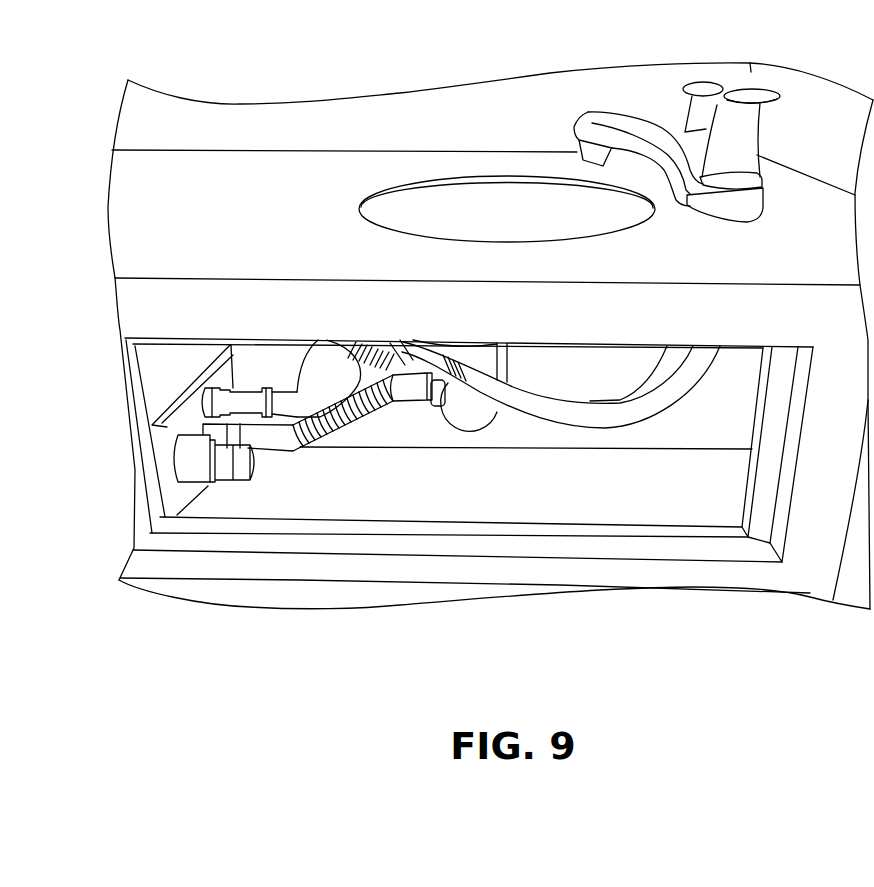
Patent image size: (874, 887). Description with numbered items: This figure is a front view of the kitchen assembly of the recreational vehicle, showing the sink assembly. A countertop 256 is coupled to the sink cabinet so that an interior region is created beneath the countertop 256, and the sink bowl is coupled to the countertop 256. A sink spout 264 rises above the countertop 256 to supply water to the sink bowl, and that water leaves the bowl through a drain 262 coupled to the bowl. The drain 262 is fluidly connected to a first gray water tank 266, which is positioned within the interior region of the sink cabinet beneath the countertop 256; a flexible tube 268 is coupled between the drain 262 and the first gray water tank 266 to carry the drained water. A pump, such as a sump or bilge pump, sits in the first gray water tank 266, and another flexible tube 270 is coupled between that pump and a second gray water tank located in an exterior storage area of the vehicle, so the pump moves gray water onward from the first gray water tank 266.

The countertop 256 is at (415, 494).
The drain 262 is at (477, 410).
The sink spout 264 is at (600, 127).
The first gray water tank 266 is at (160, 462).
The flexible tube 268 is at (318, 445).
The flexible tube 270 is at (288, 400).